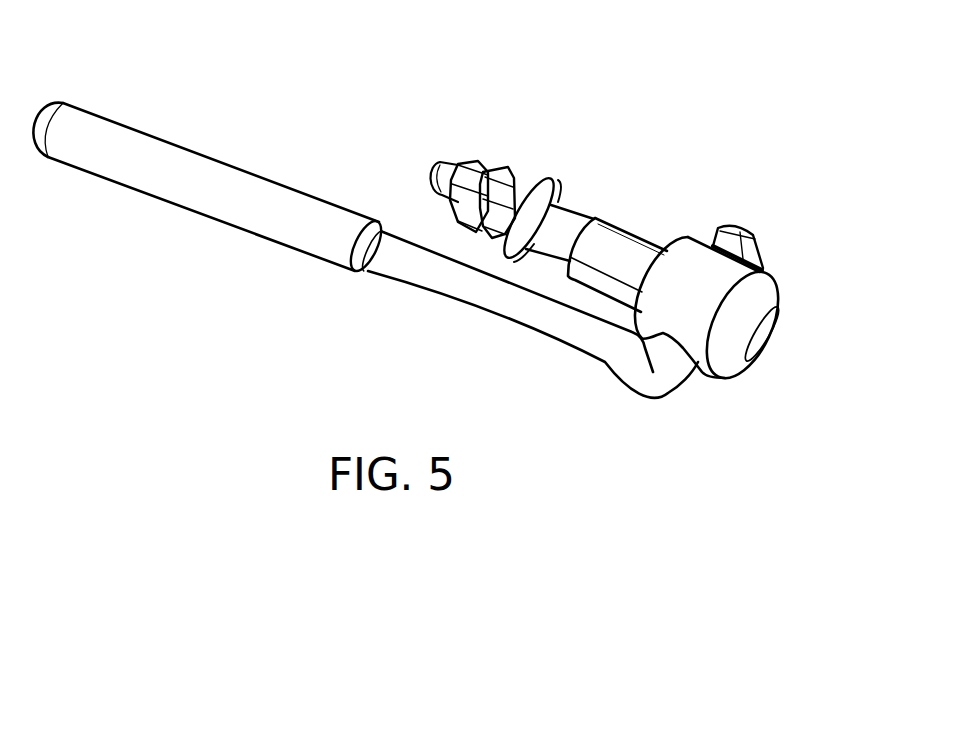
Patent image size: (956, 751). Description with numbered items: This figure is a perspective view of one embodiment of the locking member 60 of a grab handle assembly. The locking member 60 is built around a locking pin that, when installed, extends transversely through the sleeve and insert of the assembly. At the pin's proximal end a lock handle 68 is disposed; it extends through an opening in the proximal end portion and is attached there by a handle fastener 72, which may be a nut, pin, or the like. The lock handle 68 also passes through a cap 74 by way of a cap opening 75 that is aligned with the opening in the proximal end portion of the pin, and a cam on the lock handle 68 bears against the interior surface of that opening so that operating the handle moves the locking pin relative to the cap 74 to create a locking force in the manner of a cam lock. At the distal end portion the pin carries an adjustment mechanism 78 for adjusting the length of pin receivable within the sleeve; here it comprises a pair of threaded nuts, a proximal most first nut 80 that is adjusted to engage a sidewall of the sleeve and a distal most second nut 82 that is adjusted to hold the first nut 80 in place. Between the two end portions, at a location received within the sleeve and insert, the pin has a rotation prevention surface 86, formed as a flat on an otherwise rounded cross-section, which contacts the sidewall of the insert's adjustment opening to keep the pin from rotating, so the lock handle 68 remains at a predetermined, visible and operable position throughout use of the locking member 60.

The locking member 60 is at (637, 70).
The lock handle 68 is at (310, 257).
The handle fastener 72 is at (764, 250).
The cap 74 is at (782, 294).
The cap opening 75 is at (688, 364).
The adjustment mechanism 78 is at (507, 168).
The first nut 80 is at (528, 180).
The second nut 82 is at (482, 161).
The rotation prevention surface 86 is at (617, 244).